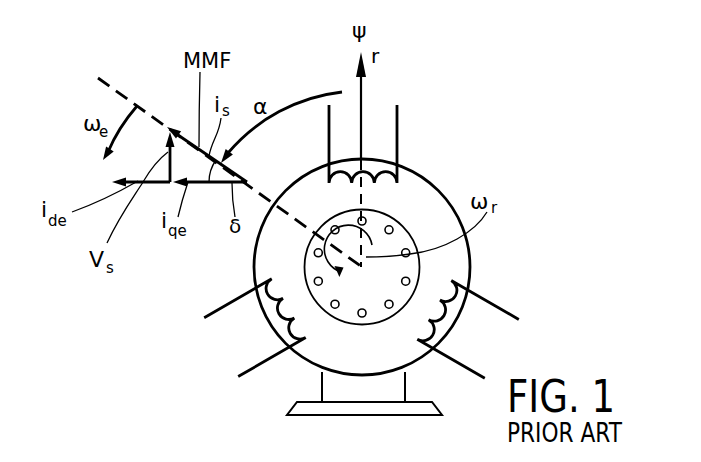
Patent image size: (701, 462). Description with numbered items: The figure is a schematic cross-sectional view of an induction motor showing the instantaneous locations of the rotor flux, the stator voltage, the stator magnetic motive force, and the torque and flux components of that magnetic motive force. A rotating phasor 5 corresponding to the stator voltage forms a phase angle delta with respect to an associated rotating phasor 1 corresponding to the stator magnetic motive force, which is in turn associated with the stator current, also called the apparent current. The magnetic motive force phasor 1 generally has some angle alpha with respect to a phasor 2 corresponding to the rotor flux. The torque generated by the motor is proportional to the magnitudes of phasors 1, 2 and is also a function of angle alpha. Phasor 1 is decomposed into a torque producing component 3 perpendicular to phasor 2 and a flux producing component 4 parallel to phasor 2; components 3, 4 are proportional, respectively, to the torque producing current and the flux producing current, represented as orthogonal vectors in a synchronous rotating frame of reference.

The rotating phasor 1 is at (188, 139).
The phasor 2 is at (362, 92).
The torque producing component 3 is at (208, 183).
The flux producing component 4 is at (165, 176).
The rotating phasor 5 is at (138, 181).